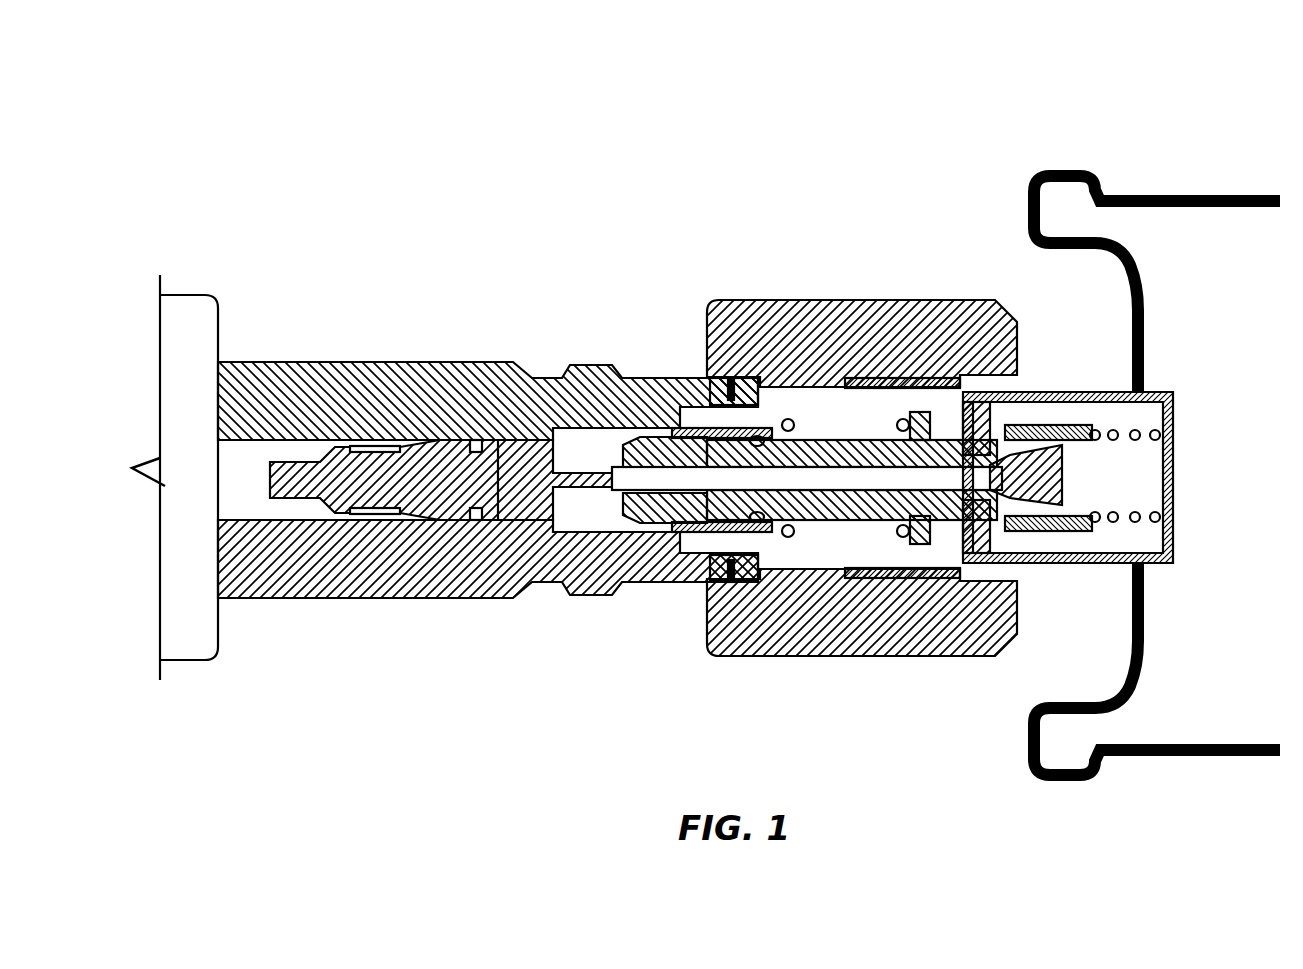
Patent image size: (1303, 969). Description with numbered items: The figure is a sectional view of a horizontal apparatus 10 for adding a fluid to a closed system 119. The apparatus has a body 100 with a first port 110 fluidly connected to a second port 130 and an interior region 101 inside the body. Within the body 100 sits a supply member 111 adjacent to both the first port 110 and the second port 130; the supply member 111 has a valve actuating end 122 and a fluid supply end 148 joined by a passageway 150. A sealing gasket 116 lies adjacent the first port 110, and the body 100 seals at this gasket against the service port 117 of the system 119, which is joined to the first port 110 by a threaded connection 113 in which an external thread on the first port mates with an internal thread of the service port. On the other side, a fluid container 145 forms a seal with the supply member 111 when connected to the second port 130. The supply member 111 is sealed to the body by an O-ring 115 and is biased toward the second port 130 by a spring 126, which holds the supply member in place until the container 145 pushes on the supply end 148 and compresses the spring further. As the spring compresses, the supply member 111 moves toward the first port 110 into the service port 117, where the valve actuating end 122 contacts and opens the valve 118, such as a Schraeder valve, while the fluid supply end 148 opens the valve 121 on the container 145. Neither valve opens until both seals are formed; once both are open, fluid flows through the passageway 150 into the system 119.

The apparatus 10 is at (694, 76).
The body 100 is at (742, 300).
The interior region 101 is at (862, 400).
The first port 110 is at (680, 582).
The supply member 111 is at (842, 482).
The threaded connection 113 is at (658, 390).
The O-ring 115 is at (762, 436).
The sealing gasket 116 is at (736, 590).
The service port 117 is at (702, 385).
The valve 118 is at (583, 578).
The closed system 119 is at (220, 328).
The valve 121 is at (1072, 470).
The valve actuating end 122 is at (560, 375).
The spring 126 is at (786, 542).
The second port 130 is at (1045, 388).
The fluid container 145 is at (1033, 176).
The fluid supply end 148 is at (1065, 532).
The passageway 150 is at (866, 493).